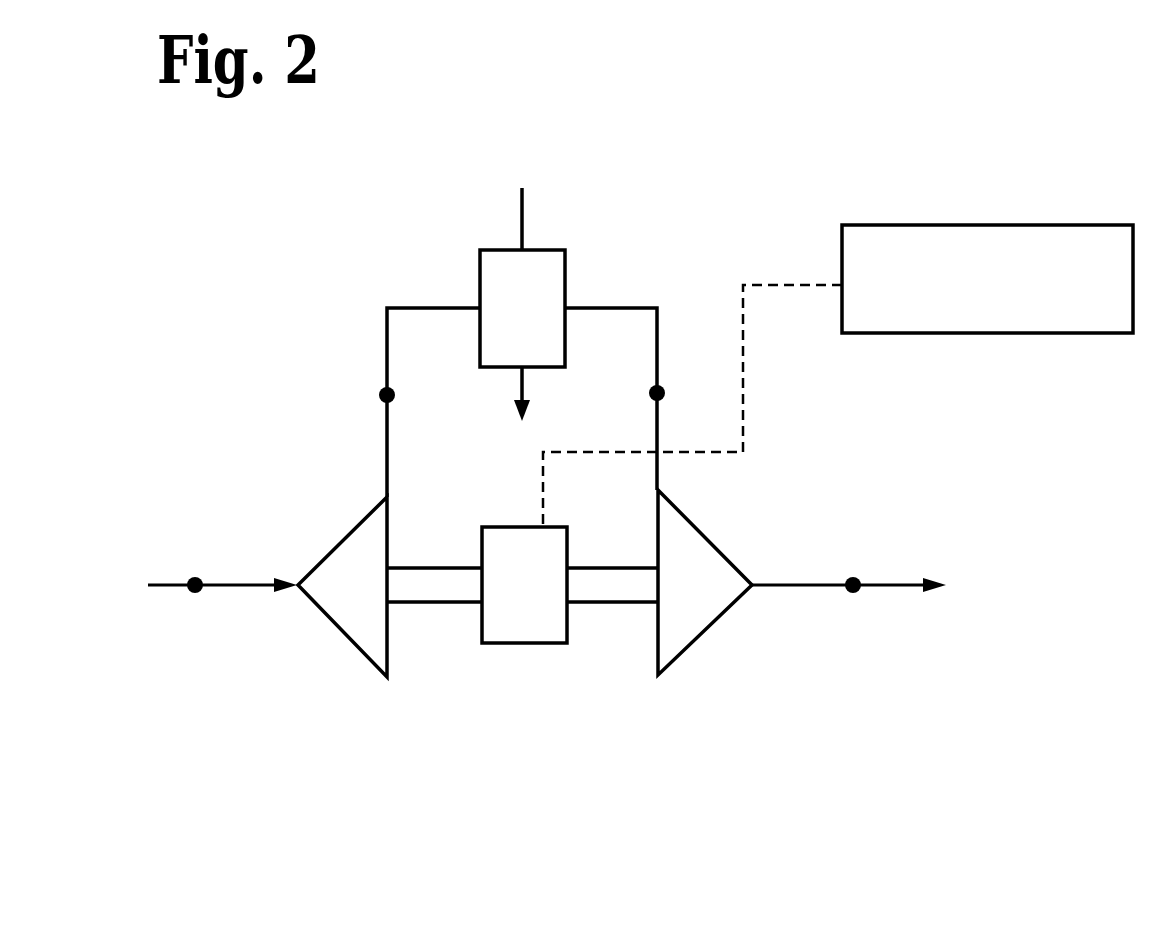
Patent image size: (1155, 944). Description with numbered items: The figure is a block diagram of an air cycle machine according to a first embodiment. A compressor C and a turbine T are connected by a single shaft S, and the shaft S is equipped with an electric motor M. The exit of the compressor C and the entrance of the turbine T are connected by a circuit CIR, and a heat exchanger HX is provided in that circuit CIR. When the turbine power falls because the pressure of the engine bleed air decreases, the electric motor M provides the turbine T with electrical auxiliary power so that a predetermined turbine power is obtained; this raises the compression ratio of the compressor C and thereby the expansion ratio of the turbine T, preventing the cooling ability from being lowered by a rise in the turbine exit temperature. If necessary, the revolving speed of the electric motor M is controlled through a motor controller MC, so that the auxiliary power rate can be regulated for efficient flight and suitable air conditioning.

The heat exchanger HX is at (440, 205).
The circuit CIR is at (610, 307).
The motor controller MC is at (838, 376).
The compressor C is at (300, 683).
The shaft S is at (436, 605).
The electric motor M is at (560, 713).
The turbine T is at (745, 663).